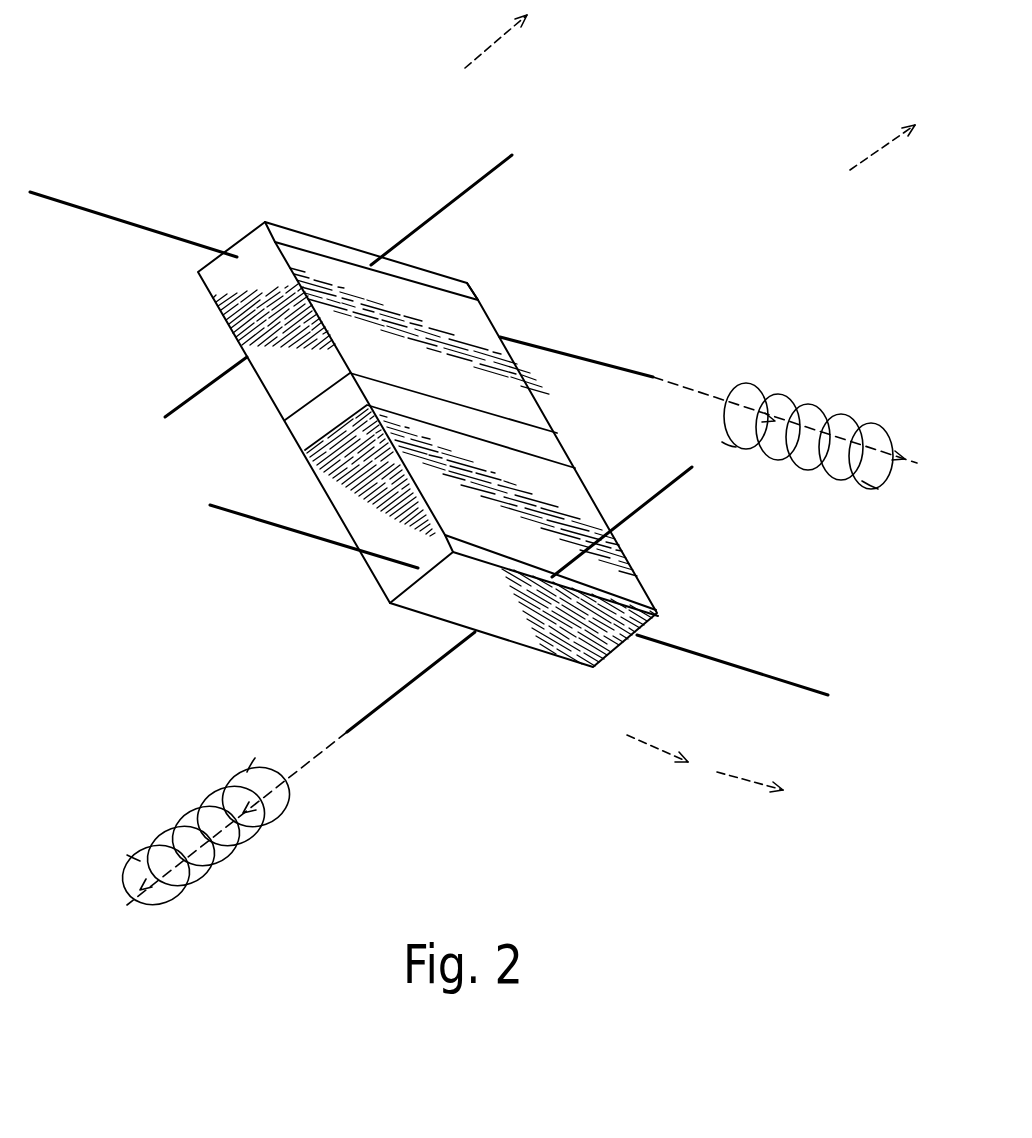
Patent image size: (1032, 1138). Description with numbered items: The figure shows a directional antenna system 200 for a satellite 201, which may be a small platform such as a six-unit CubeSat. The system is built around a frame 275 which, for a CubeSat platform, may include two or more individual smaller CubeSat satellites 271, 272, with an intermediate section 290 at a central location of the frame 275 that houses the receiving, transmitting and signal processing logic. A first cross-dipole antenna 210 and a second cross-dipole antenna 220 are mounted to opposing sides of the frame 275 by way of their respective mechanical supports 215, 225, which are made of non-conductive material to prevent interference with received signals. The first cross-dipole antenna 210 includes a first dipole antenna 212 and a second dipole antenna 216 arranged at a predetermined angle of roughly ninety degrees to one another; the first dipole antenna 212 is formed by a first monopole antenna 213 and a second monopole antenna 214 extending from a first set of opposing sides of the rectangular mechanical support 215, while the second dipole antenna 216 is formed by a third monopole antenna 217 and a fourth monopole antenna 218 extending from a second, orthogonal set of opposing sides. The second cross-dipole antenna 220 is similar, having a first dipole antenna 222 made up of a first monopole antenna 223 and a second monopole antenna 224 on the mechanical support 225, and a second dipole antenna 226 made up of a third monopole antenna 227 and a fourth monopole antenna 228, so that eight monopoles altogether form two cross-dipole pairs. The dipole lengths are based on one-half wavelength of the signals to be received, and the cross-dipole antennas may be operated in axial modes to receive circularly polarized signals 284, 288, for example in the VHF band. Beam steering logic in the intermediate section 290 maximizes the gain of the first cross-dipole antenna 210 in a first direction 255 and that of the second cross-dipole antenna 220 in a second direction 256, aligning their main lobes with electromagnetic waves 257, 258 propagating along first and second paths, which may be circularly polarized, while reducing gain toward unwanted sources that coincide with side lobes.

The directional antenna system 200 is at (657, 83).
The satellite 201 is at (646, 589).
The first cross-dipole antenna 210 is at (510, 160).
The first dipole antenna 212 is at (177, 413).
The first monopole antenna 213 is at (190, 398).
The second monopole antenna 214 is at (445, 203).
The mechanical support 215 is at (477, 293).
The second dipole antenna 216 is at (52, 196).
The third monopole antenna 217 is at (165, 233).
The fourth monopole antenna 218 is at (620, 373).
The second cross-dipole antenna 220 is at (813, 697).
The first dipole antenna 222 is at (223, 510).
The first monopole antenna 223 is at (292, 527).
The second monopole antenna 224 is at (733, 662).
The mechanical support 225 is at (415, 613).
The second dipole antenna 226 is at (688, 475).
The third monopole antenna 227 is at (643, 497).
The fourth monopole antenna 228 is at (388, 705).
The first direction 255 is at (494, 64).
The second direction 256 is at (667, 736).
The wave 257 is at (852, 151).
The wave 258 is at (756, 766).
The CubeSat satellite 271 is at (523, 370).
The CubeSat satellite 272 is at (620, 543).
The frame 275 is at (293, 273).
The circularly polarized signal 284 is at (782, 392).
The circularly polarized signal 288 is at (217, 877).
The intermediate section 290 is at (559, 443).